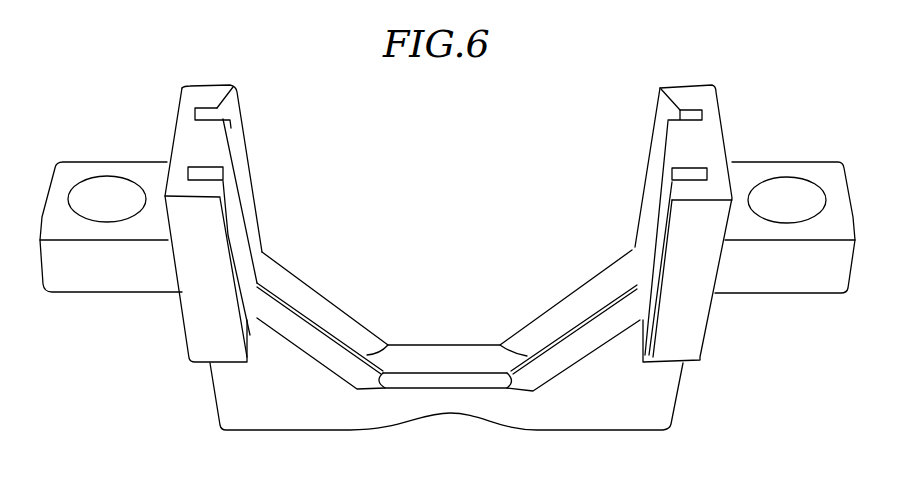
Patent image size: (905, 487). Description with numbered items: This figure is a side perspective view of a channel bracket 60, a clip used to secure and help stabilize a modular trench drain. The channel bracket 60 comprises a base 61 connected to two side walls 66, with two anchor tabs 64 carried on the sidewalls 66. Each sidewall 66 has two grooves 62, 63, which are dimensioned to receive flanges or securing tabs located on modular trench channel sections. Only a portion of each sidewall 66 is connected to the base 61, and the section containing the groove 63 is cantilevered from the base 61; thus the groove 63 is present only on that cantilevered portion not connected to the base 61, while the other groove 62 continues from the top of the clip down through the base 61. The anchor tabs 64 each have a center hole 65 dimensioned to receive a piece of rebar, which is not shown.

The channel bracket 60 is at (777, 387).
The base 61 is at (625, 432).
The groove 62 is at (206, 110).
The groove 63 is at (202, 170).
The anchor tab 64 is at (93, 268).
The center hole 65 is at (108, 197).
The side wall 66 is at (213, 310).